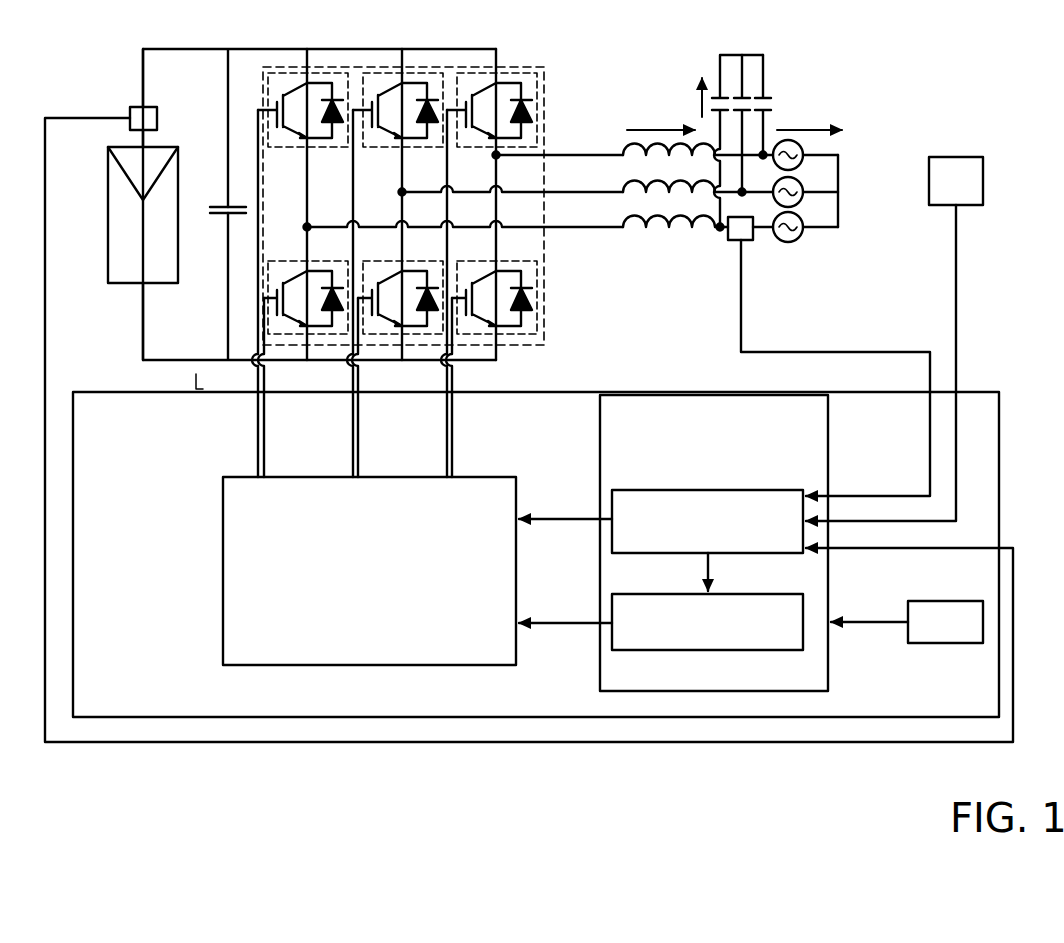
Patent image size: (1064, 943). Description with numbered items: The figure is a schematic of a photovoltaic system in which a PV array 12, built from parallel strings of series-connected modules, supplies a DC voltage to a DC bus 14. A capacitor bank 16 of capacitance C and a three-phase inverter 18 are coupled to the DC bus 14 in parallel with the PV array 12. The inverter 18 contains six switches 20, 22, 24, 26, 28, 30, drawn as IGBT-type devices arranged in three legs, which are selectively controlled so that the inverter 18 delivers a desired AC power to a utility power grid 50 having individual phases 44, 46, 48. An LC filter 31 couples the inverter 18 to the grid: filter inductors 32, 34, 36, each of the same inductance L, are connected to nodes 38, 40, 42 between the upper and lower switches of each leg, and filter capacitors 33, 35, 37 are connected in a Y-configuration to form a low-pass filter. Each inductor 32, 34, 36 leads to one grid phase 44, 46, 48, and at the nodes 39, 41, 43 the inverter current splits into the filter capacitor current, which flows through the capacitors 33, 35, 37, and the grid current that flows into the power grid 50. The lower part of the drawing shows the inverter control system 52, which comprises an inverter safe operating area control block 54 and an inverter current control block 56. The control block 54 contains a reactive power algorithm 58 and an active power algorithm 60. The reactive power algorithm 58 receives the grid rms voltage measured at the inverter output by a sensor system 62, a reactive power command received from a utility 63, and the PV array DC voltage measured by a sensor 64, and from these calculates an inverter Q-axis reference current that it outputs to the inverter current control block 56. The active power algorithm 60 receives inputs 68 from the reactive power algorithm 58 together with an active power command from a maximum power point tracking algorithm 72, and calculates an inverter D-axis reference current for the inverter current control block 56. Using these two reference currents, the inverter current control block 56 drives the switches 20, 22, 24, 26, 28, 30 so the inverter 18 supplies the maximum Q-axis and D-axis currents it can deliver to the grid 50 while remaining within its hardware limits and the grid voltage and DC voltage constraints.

The PV array 12 is at (108, 218).
The DC bus 14 is at (193, 48).
The capacitor bank 16 is at (237, 216).
The three-phase inverter 18 is at (544, 247).
The switch 20 is at (300, 147).
The switch 22 is at (290, 261).
The switch 24 is at (387, 147).
The switch 26 is at (372, 261).
The switch 28 is at (480, 147).
The switch 30 is at (463, 261).
The LC filter 31 is at (650, 72).
The filter inductor 32 is at (627, 232).
The filter capacitor 33 is at (718, 94).
The filter inductor 34 is at (628, 182).
The filter capacitor 35 is at (745, 94).
The filter inductor 36 is at (628, 144).
The filter capacitor 37 is at (768, 94).
The node 38 is at (309, 226).
The node 39 is at (716, 230).
The node 40 is at (404, 191).
The node 41 is at (803, 174).
The node 42 is at (499, 156).
The node 43 is at (765, 152).
The phase 44 is at (790, 242).
The phase 46 is at (800, 205).
The phase 48 is at (800, 146).
The utility power grid 50 is at (849, 80).
The inverter control system 52 is at (535, 392).
The inverter safe operating area control block 54 is at (828, 658).
The inverter current control block 56 is at (237, 477).
The reactive power algorithm 58 is at (740, 553).
The active power algorithm 60 is at (708, 650).
The sensor system 62 is at (737, 245).
The utility 63 is at (957, 157).
The sensor 64 is at (128, 113).
The inputs 68 is at (705, 570).
The maximum power point tracking algorithm 72 is at (945, 600).